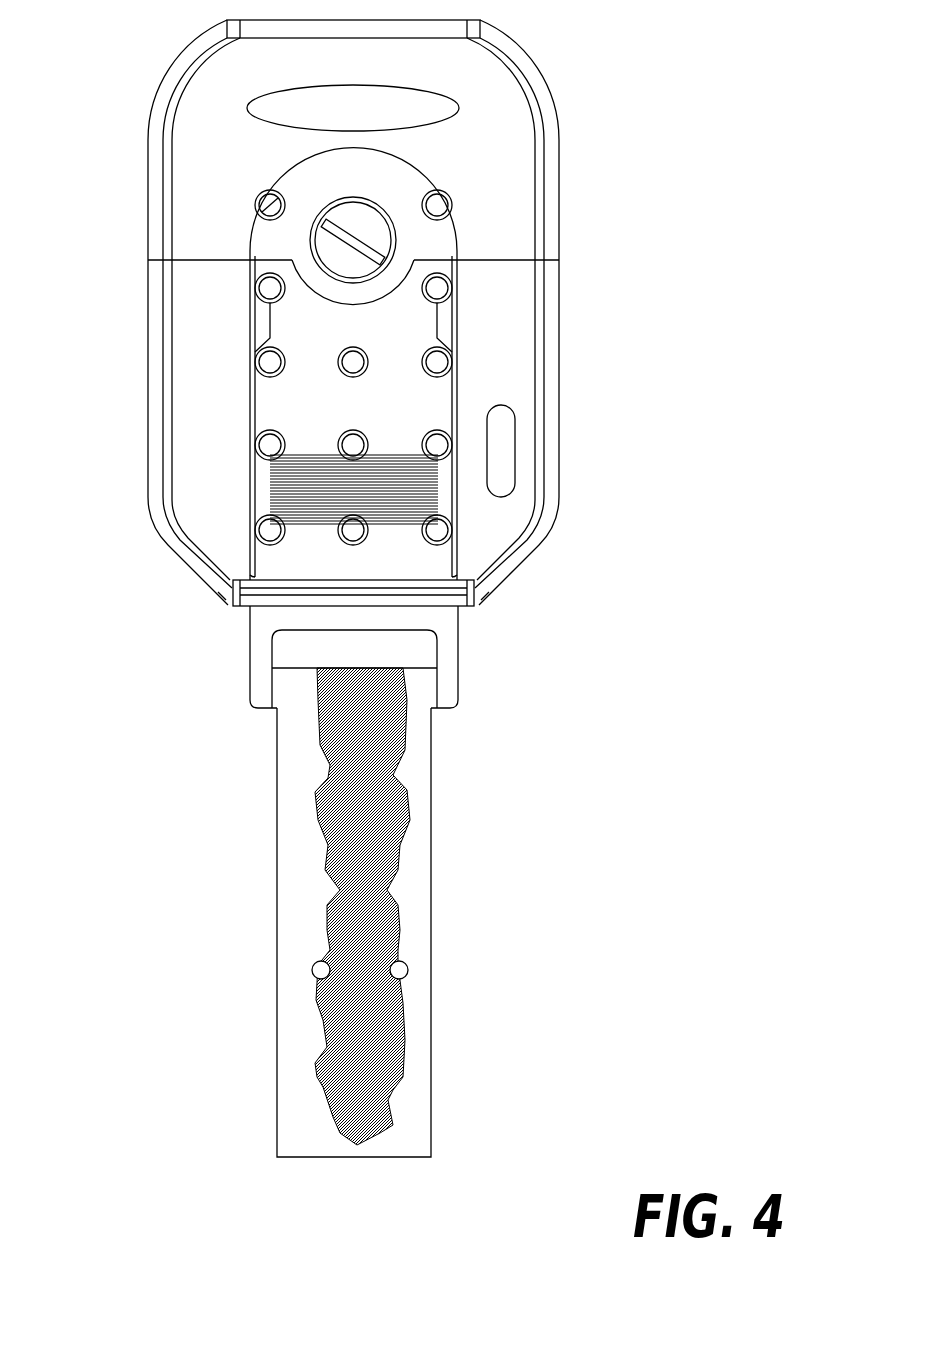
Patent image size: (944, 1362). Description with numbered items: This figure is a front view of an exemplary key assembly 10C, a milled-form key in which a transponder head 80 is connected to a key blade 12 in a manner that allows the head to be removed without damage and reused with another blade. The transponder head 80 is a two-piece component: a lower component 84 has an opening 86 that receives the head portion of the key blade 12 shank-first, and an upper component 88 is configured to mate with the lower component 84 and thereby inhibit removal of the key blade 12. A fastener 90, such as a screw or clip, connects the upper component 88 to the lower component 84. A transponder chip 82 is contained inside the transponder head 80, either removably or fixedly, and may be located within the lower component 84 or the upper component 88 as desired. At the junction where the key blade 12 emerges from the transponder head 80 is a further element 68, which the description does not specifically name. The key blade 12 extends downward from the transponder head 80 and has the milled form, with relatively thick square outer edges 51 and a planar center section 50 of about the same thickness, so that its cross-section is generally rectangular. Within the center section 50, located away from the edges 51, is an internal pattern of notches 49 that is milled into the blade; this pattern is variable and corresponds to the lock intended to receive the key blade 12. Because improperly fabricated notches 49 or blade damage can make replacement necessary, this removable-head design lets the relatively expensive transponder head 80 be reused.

The key assembly 10C is at (637, 172).
The transponder head 80 is at (117, 30).
The upper component 88 is at (560, 228).
The lower component 84 is at (560, 345).
The fastener 90 is at (377, 240).
The transponder chip 82 is at (506, 452).
The opening 86 is at (233, 606).
The key blade 12 is at (113, 608).
The collar 68 is at (354, 657).
The outer edges 51 is at (277, 1130).
The center section 50 is at (331, 1148).
The notches 49 is at (318, 972).